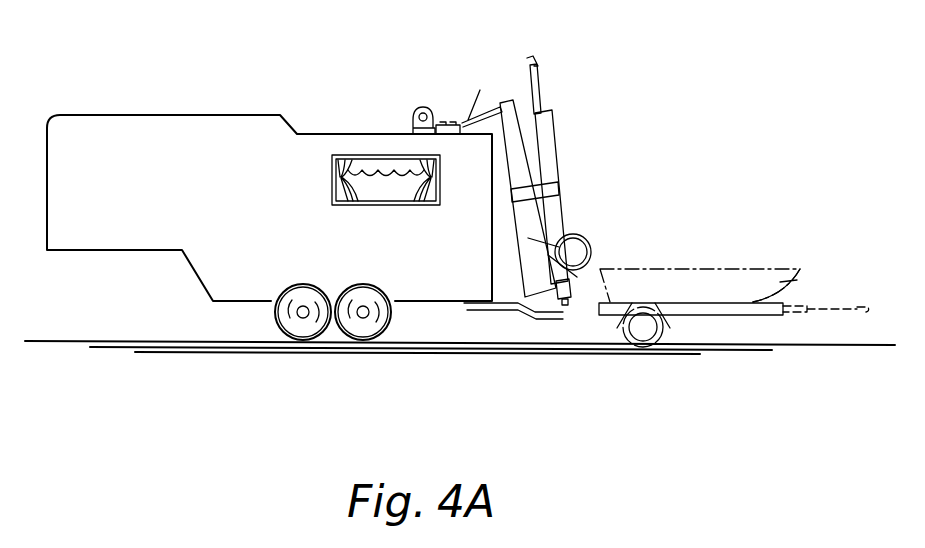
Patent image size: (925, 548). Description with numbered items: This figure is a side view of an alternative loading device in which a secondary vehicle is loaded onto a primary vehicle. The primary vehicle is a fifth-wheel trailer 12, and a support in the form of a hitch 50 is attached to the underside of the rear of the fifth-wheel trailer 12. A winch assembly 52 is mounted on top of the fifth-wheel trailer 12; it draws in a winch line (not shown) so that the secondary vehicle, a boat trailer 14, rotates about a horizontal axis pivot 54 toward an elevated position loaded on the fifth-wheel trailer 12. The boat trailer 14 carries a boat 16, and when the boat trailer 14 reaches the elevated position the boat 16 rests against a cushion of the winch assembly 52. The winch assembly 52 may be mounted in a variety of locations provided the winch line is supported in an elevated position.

The fifth-wheel trailer 12 is at (252, 102).
The winch assembly 52 is at (449, 96).
The boat trailer 14 is at (570, 169).
The boat 16 is at (590, 238).
The hitch 50 is at (500, 305).
The horizontal axis pivot 54 is at (578, 320).